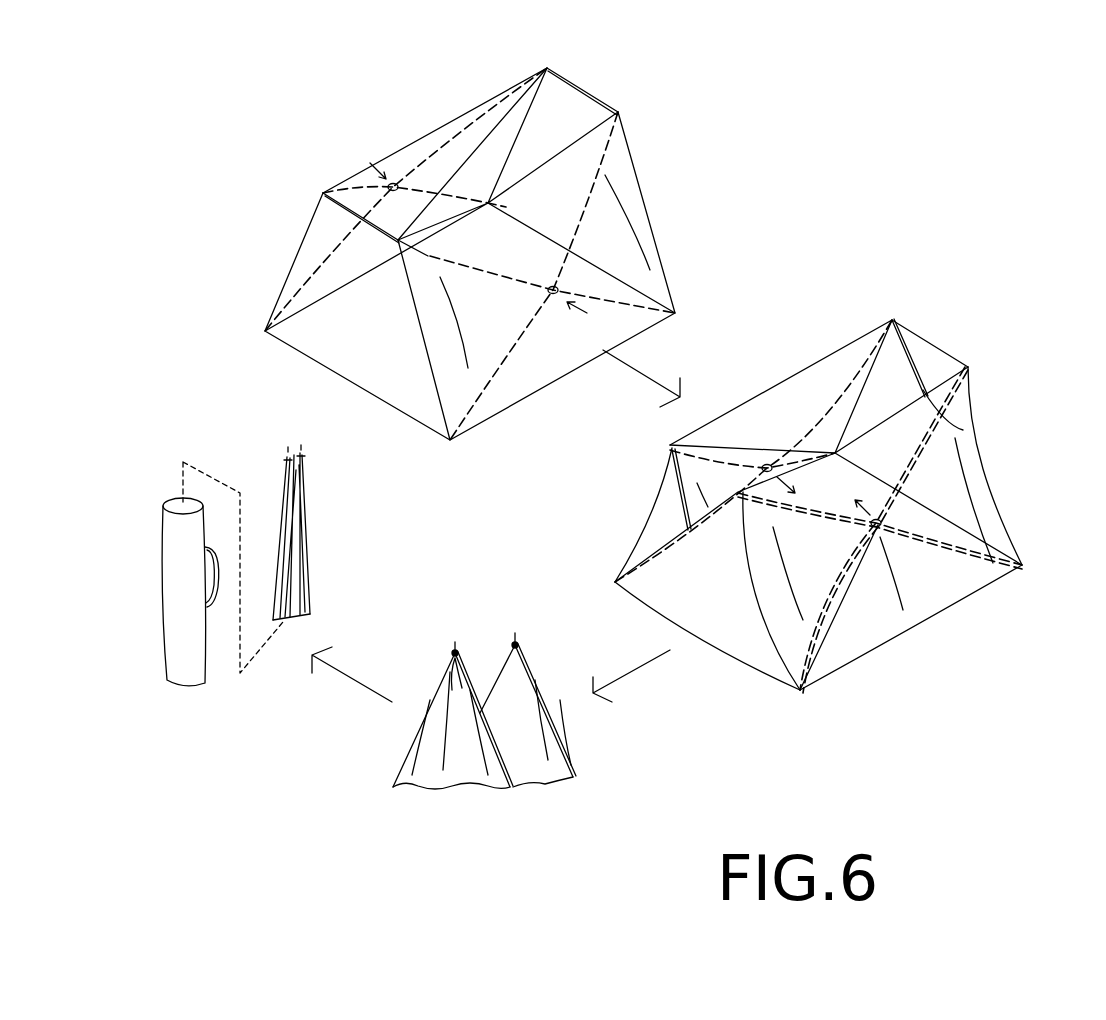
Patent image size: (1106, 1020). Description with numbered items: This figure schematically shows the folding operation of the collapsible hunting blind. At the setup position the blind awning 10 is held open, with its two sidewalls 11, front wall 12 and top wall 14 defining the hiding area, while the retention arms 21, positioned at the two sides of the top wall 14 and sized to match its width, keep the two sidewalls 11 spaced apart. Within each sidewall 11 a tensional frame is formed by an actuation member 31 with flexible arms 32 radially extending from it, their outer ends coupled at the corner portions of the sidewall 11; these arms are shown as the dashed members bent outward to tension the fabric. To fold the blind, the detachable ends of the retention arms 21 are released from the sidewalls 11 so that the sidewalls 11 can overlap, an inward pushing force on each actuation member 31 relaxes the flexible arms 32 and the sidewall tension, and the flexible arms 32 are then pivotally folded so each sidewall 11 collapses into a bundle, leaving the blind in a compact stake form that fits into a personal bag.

The blind awning 10 is at (443, 777).
The sidewall 11 is at (515, 330).
The front wall 12 is at (388, 339).
The top wall 14 is at (568, 209).
The retention arm 21 is at (567, 82).
The actuation member 31 is at (400, 182).
The flexible arm 32 is at (452, 137).